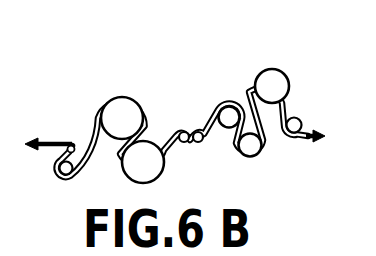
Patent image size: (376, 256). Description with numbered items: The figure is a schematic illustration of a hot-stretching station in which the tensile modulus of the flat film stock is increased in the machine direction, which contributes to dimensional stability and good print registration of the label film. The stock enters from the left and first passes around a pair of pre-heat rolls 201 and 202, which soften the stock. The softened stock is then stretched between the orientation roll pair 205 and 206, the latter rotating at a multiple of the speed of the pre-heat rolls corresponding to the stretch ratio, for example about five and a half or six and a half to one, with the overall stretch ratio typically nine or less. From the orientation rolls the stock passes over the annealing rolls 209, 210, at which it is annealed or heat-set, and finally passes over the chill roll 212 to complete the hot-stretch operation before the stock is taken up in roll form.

The pre-heat roll 201 is at (115, 108).
The pre-heat roll 202 is at (138, 173).
The orientation roll 205 is at (185, 130).
The orientation roll 206 is at (198, 131).
The annealing roll 209 is at (227, 110).
The annealing roll 210 is at (259, 152).
The chill roll 212 is at (275, 80).